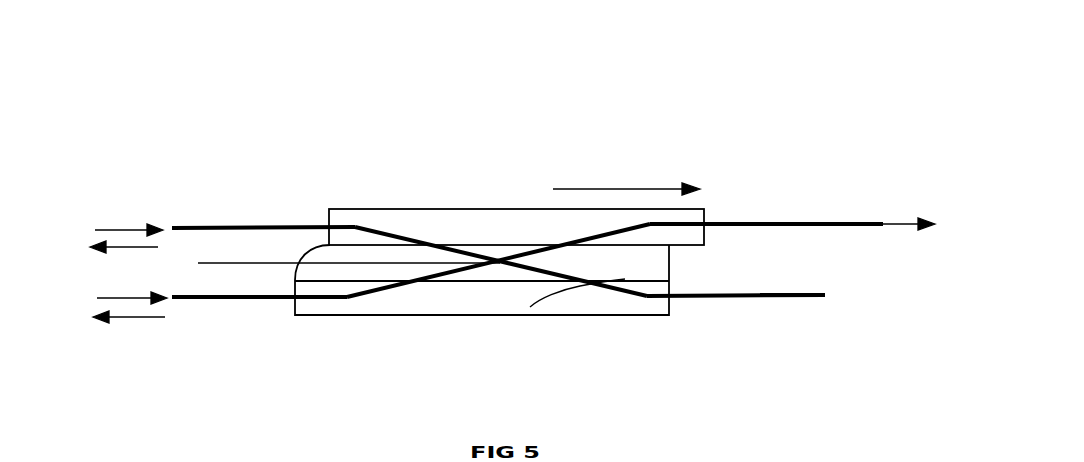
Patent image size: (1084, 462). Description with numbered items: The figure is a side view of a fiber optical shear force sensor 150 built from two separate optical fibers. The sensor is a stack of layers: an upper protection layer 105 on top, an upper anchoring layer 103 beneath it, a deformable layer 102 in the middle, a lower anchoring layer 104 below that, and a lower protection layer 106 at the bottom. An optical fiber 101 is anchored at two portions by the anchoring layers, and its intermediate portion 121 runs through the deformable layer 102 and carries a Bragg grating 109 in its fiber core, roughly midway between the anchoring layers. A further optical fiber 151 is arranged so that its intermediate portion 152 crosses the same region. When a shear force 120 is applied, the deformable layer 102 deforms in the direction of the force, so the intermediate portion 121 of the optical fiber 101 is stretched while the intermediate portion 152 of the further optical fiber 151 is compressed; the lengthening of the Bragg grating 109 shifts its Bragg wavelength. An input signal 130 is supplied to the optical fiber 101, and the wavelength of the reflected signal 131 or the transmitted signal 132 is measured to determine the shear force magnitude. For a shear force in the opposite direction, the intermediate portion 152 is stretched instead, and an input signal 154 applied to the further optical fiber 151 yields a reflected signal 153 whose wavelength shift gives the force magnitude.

The force sensor 150 is at (733, 112).
The upper protection layer 105 is at (328, 217).
The lower protection layer 106 is at (643, 314).
The upper anchoring layer 103 is at (327, 244).
The optical fiber 101 is at (247, 303).
The intermediate portion of the further optical fiber 152 is at (655, 285).
The deformable layer 102 is at (703, 244).
The lower anchoring layer 104 is at (672, 256).
The further optical fiber 151 is at (783, 297).
The transmitted signal 132 is at (909, 239).
The Bragg grating 109 is at (325, 265).
The shear force 120 is at (626, 179).
The intermediate portion of the optical fiber 121 is at (375, 320).
The input signal 154 is at (105, 228).
The reflected signal 153 is at (103, 250).
The input signal 130 is at (132, 289).
The reflected signal 131 is at (129, 326).